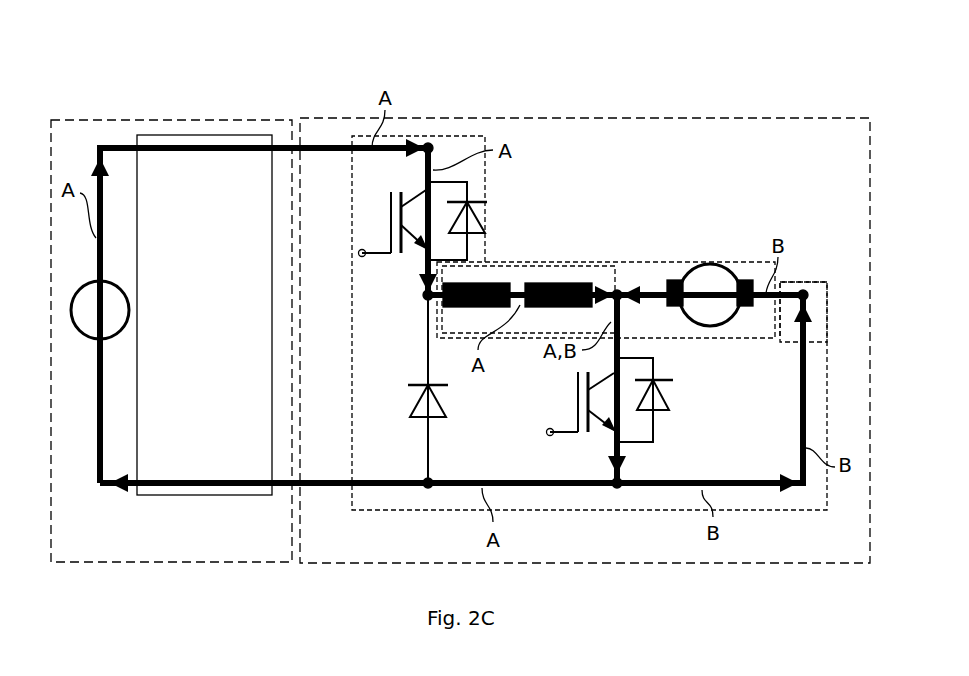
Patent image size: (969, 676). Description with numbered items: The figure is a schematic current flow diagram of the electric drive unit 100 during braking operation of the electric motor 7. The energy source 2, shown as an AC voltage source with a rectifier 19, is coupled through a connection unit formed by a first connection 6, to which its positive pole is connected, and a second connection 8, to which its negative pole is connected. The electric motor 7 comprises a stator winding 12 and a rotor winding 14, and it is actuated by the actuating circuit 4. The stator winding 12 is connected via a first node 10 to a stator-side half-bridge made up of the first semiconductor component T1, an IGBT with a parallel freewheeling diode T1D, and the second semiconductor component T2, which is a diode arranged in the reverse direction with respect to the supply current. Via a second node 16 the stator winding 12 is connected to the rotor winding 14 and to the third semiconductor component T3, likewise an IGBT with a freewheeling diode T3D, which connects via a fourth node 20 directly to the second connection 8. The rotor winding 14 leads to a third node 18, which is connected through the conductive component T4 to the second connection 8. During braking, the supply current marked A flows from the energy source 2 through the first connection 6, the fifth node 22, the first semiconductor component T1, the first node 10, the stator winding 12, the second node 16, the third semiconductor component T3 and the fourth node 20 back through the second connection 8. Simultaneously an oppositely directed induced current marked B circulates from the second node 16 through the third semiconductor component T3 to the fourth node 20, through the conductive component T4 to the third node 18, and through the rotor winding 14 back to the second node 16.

The energy source 2 is at (98, 120).
The rectifier 19 is at (197, 135).
The electric drive unit 100 is at (805, 118).
The actuating circuit 4 is at (480, 136).
The first connection 6 is at (330, 148).
The second connection 8 is at (333, 486).
The electric motor 7 is at (736, 262).
The stator winding 12 is at (522, 270).
The rotor winding 14 is at (702, 248).
The fifth node 22 is at (430, 146).
The first node 10 is at (422, 298).
The second node 16 is at (614, 290).
The third node 18 is at (806, 290).
The fourth node 20 is at (617, 493).
The first semiconductor component T1 is at (366, 232).
The freewheeling diode T1D is at (496, 206).
The second semiconductor component T2 is at (388, 378).
The third semiconductor component T3 is at (546, 401).
The freewheeling diode T3D is at (668, 424).
The conductive component T4 is at (807, 413).